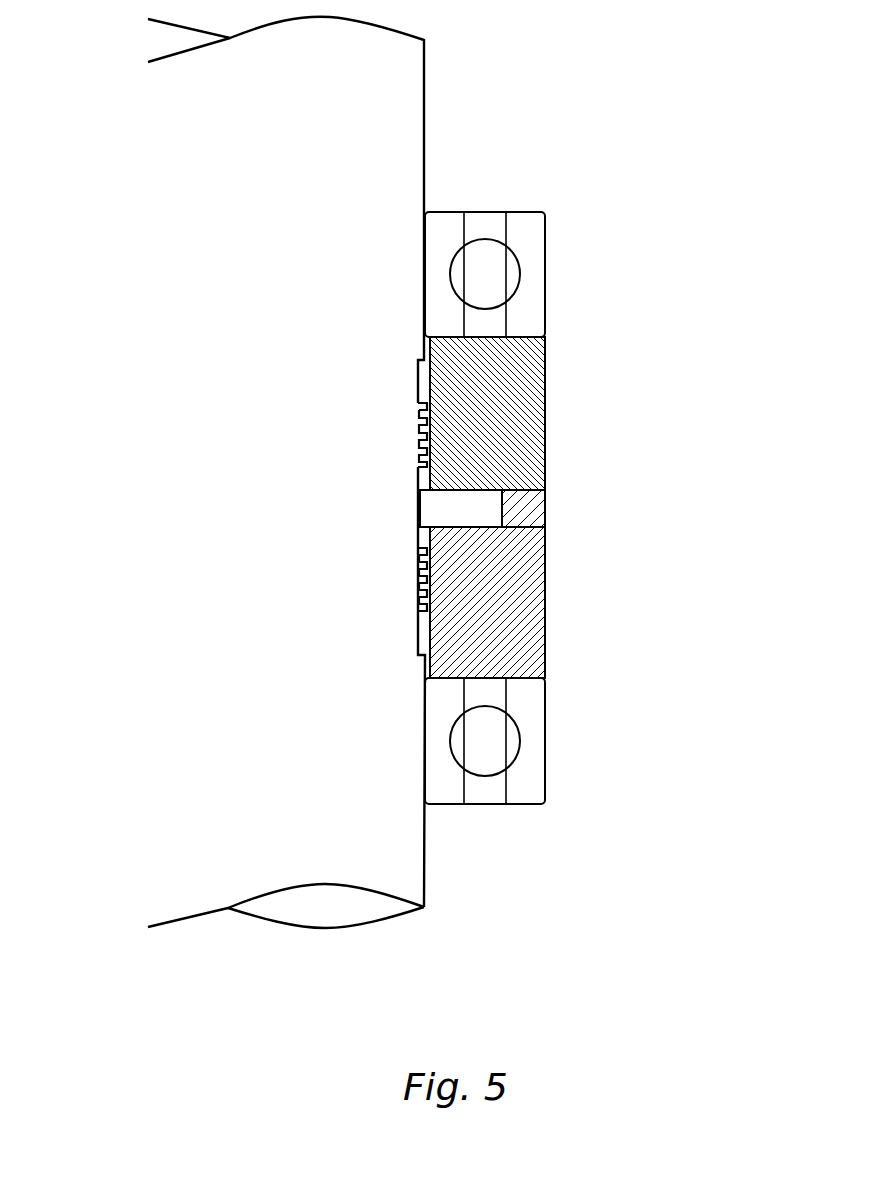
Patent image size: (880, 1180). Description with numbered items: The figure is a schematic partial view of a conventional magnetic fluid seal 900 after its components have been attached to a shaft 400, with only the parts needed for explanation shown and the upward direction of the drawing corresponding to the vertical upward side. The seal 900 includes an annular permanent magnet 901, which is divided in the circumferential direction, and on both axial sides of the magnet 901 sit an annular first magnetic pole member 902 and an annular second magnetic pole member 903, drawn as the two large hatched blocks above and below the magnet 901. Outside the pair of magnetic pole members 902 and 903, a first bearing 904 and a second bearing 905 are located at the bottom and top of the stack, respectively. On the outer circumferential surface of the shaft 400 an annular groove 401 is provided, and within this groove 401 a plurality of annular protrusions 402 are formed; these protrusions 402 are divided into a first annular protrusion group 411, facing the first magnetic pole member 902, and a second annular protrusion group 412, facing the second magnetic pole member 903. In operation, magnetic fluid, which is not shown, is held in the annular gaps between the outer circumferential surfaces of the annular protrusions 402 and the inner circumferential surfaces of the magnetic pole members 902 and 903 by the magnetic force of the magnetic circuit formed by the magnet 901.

The shaft 400 is at (195, 883).
The annular groove 401 is at (418, 645).
The annular protrusions 402 is at (418, 407).
The first annular protrusion group 411 is at (324, 591).
The second annular protrusion group 412 is at (324, 414).
The magnetic fluid seal 900 is at (580, 178).
The permanent magnet 901 is at (530, 512).
The first magnetic pole member 902 is at (545, 625).
The second magnetic pole member 903 is at (545, 415).
The first bearing 904 is at (537, 764).
The second bearing 905 is at (535, 302).